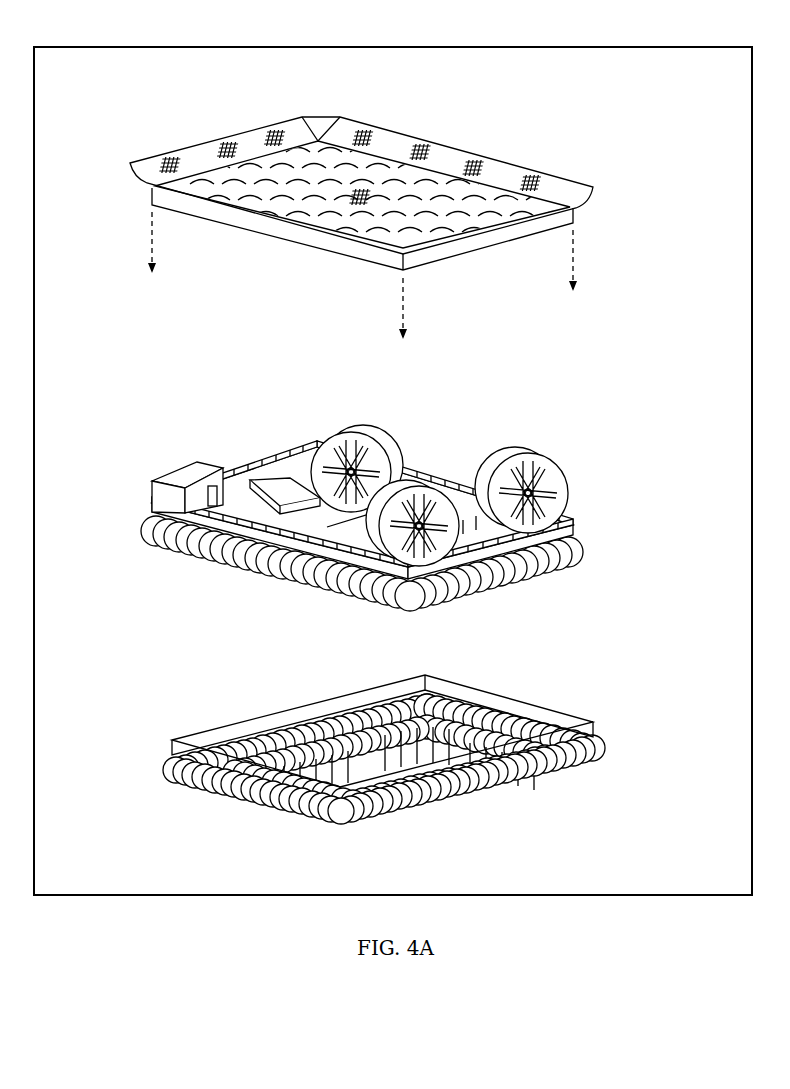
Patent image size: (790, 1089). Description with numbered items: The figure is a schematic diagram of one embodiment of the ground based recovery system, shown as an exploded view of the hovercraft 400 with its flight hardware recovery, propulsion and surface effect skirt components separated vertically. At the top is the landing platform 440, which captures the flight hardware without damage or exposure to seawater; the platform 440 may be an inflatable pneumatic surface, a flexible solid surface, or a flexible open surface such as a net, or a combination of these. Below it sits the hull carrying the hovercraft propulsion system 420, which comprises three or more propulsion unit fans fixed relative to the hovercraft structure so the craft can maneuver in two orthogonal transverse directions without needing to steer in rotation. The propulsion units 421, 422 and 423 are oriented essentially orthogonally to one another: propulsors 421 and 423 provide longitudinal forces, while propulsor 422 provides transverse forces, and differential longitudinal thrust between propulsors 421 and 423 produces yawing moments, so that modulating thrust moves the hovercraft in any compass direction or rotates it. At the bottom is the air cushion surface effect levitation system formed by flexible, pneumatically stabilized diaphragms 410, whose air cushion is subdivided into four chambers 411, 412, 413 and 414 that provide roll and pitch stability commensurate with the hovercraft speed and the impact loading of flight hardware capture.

The hovercraft 400 is at (120, 45).
The landing platform 440 is at (460, 140).
The hovercraft propulsion system 420 is at (395, 504).
The propulsion unit 421 is at (573, 471).
The propulsion unit 422 is at (398, 434).
The propulsion unit 423 is at (459, 553).
The flexible pneumatically stabilized diaphragms 410 is at (394, 757).
The chamber 411 is at (437, 773).
The chamber 412 is at (507, 765).
The chamber 413 is at (275, 767).
The chamber 414 is at (363, 790).